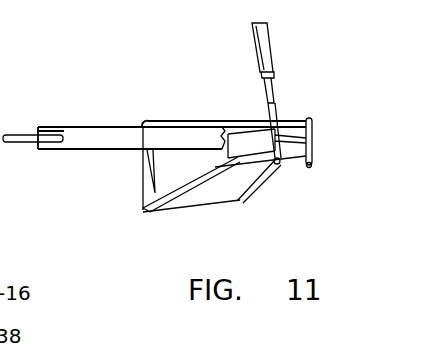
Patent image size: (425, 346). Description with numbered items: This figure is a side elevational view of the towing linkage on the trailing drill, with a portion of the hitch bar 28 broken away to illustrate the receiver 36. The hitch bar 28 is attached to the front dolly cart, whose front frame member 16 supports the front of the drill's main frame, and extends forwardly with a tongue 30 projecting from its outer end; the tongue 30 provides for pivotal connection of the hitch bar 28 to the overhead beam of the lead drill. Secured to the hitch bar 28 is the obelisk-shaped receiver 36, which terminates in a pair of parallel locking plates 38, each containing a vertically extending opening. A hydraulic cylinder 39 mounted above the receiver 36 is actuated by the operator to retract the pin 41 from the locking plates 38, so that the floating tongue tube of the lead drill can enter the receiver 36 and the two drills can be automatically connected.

The front frame member 16 is at (308, 166).
The hitch bar 28 is at (85, 128).
The tongue 30 is at (25, 142).
The receiver 36 is at (210, 120).
The locking plates 38 is at (287, 120).
The hydraulic cylinder 39 is at (254, 22).
The pin 41 is at (313, 123).